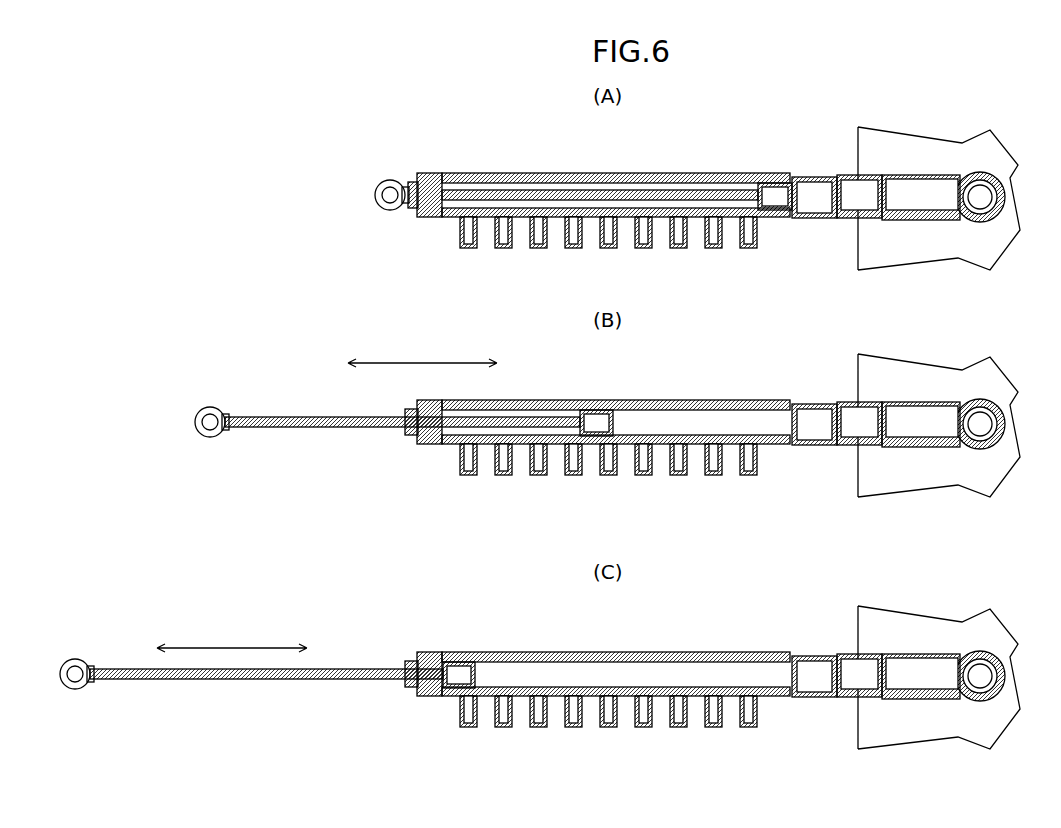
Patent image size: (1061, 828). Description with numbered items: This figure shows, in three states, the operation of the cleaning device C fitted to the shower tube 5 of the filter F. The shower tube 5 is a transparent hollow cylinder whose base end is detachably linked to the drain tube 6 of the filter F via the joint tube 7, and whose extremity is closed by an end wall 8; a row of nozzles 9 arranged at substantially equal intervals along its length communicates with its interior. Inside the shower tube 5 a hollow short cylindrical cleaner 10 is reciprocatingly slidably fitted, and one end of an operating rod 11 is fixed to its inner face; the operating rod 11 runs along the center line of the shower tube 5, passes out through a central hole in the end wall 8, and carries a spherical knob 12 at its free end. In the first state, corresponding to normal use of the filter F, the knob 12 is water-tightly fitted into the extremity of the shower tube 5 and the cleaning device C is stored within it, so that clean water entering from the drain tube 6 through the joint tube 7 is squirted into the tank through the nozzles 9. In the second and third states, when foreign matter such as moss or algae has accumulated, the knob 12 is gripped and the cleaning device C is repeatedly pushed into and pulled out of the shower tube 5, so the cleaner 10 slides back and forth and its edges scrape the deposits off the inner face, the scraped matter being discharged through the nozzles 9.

The shower tube 5 is at (600, 173).
The drain tube 6 is at (928, 200).
The joint tube 7 is at (848, 220).
The end wall 8 is at (428, 218).
The nozzles 9 is at (702, 248).
The cleaner 10 is at (757, 183).
The operating rod 11 is at (596, 190).
The knob 12 is at (390, 180).
The cleaning device C is at (778, 175).
The filter F is at (1012, 155).